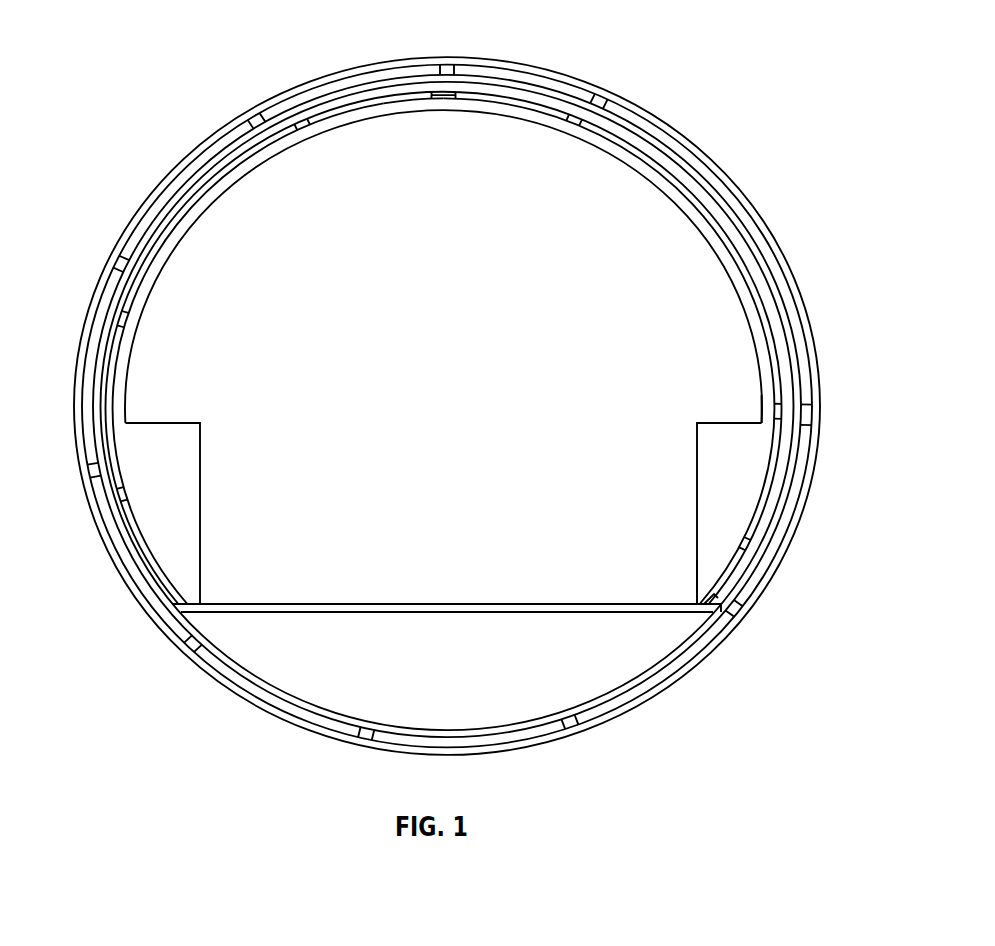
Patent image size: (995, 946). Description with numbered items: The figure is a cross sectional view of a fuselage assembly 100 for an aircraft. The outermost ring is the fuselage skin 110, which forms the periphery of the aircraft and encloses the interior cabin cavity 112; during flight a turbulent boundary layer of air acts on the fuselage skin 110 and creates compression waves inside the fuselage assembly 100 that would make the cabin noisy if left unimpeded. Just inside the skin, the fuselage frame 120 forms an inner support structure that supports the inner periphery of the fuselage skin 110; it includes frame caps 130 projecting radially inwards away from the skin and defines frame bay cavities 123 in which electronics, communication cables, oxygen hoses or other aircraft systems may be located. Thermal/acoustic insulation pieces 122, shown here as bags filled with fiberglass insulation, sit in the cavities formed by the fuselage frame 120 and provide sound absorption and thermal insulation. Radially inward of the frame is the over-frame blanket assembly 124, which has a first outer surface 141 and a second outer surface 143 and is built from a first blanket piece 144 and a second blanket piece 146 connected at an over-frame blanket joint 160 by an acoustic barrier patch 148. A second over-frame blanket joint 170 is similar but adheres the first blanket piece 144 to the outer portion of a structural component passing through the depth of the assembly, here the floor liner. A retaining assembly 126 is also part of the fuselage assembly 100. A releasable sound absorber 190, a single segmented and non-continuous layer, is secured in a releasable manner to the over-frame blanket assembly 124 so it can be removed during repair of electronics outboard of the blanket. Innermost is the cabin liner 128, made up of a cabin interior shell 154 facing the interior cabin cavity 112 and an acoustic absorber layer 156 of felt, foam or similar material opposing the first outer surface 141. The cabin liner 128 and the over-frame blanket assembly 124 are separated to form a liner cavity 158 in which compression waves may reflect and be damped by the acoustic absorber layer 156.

The fuselage assembly 100 is at (245, 50).
The fuselage skin 110 is at (593, 80).
The interior cabin cavity 112 is at (502, 575).
The fuselage frame 120 is at (690, 155).
The thermal/acoustic insulation pieces 122 is at (510, 76).
The frame bay cavities 123 is at (136, 562).
The over-frame blanket assembly 124 is at (355, 92).
The retaining assembly 126 is at (138, 318).
The cabin liner 128 is at (656, 200).
The frame caps 130 is at (748, 284).
The first outer surface 141 is at (750, 587).
The second outer surface 143 is at (752, 588).
The first blanket piece 144 is at (345, 108).
The second blanket piece 146 is at (528, 103).
The acoustic barrier patch 148 is at (445, 96).
The cabin interior shell 154 is at (762, 383).
The acoustic absorber layer 156 is at (763, 397).
The liner cavity 158 is at (606, 150).
The over-frame blanket joint 160 is at (450, 88).
The over-frame blanket joint 170 is at (706, 587).
The releasable sound absorber 190 is at (222, 194).